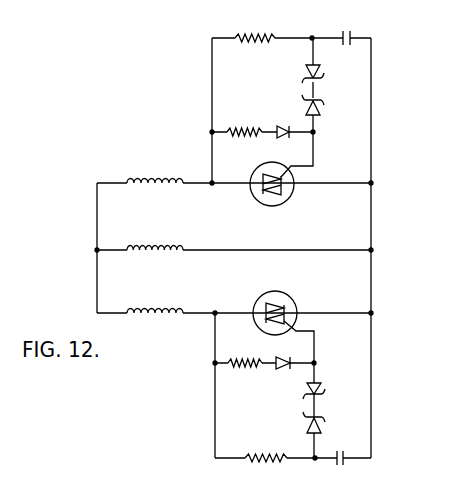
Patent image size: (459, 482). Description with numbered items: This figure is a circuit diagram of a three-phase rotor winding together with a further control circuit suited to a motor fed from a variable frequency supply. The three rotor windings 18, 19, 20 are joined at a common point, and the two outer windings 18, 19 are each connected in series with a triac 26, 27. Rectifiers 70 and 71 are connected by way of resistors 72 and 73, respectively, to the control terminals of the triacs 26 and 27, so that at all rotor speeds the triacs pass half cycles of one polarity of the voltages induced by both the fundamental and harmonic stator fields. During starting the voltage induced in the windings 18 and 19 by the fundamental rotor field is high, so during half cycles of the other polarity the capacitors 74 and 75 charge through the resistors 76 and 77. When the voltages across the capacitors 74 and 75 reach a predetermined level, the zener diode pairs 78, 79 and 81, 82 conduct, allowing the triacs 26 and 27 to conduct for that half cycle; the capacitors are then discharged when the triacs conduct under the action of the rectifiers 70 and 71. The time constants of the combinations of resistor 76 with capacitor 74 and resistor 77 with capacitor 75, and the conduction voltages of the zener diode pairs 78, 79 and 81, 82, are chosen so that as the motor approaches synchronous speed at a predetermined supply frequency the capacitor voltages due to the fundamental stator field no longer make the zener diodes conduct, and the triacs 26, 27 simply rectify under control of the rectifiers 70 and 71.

The rotor winding 18 is at (140, 179).
The rotor winding 19 is at (143, 320).
The rotor winding 20 is at (124, 256).
The triac 26 is at (296, 176).
The triac 27 is at (296, 300).
The rectifier 70 is at (276, 128).
The rectifier 71 is at (278, 368).
The resistor 72 is at (236, 134).
The resistor 73 is at (236, 360).
The capacitor 74 is at (356, 36).
The capacitor 75 is at (353, 465).
The resistor 76 is at (267, 36).
The resistor 77 is at (247, 466).
The zener diode 78 is at (323, 76).
The zener diode 79 is at (323, 104).
The zener diode 81 is at (327, 390).
The zener diode 82 is at (327, 428).